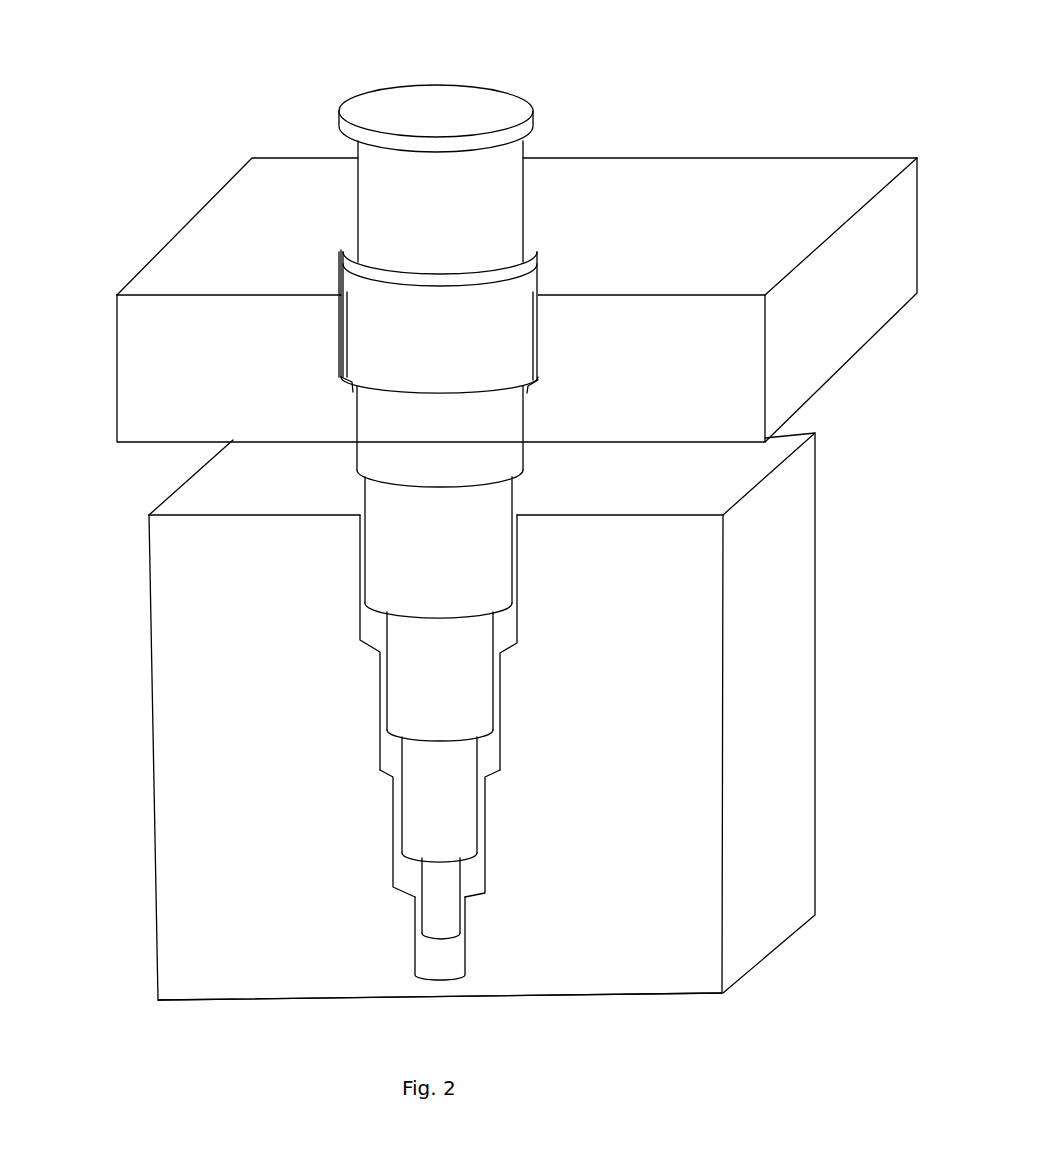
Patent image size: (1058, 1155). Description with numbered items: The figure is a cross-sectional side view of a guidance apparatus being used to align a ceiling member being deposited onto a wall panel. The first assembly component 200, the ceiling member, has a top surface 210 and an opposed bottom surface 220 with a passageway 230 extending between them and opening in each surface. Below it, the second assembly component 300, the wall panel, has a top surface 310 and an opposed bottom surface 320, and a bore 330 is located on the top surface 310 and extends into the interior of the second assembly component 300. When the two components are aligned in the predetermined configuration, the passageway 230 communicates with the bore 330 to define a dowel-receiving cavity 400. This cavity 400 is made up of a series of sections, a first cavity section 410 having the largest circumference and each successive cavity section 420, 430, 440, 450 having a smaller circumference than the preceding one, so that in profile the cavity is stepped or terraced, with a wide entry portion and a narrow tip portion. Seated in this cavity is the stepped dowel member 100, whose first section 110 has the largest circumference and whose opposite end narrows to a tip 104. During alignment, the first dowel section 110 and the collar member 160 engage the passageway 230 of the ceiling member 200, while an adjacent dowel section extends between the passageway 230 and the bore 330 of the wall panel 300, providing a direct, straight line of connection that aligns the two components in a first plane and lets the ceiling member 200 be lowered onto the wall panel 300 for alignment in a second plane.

The stepped dowel member 100 is at (507, 72).
The tip 104 is at (447, 937).
The first dowel section 110 is at (480, 420).
The collar member 160 is at (490, 332).
The first assembly component 200 is at (167, 167).
The top surface 210 is at (713, 177).
The bottom surface 220 is at (845, 360).
The passageway 230 is at (358, 392).
The second assembly component 300 is at (855, 879).
The top surface 310 is at (742, 463).
The bottom surface 320 is at (673, 997).
The bore 330 is at (370, 625).
The cavity 400 is at (345, 290).
The first cavity section 410 is at (343, 345).
The cavity section 420 is at (360, 417).
The cavity section 430 is at (387, 750).
The cavity section 440 is at (397, 863).
The cavity section 450 is at (425, 965).